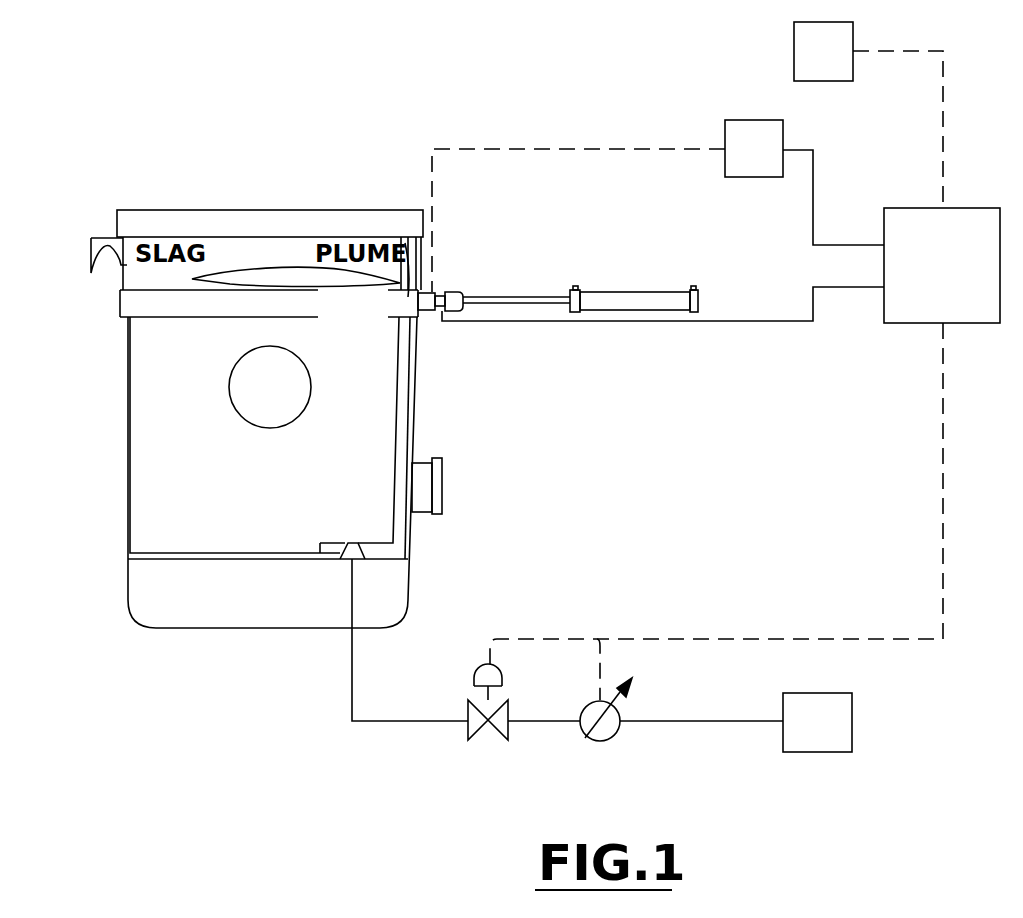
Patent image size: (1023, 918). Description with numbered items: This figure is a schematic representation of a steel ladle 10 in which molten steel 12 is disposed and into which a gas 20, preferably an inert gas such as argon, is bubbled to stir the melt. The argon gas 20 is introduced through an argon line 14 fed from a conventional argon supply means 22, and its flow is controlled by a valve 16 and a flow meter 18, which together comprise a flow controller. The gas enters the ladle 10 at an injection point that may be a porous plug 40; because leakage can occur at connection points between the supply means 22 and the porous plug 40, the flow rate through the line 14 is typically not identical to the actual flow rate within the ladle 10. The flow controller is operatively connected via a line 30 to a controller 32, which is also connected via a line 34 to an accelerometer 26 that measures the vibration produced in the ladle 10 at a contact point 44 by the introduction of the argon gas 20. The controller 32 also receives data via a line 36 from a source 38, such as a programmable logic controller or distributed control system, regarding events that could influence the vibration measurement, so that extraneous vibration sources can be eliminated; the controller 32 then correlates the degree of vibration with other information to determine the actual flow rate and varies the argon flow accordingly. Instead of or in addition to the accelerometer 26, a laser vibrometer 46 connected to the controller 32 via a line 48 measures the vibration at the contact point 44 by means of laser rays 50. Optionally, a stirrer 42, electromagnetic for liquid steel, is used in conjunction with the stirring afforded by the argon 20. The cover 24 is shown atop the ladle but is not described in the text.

The steel ladle 10 is at (408, 575).
The molten steel 12 is at (170, 483).
The argon line 14 is at (352, 697).
The valve 16 is at (490, 744).
The flow meter 18 is at (612, 741).
The gas 20 is at (375, 408).
The argon supply means 22 is at (798, 752).
The ladle cover 24 is at (117, 228).
The accelerometer 26 is at (440, 292).
The line 30 is at (887, 639).
The controller 32 is at (942, 265).
The line 34 is at (783, 321).
The line 36 is at (943, 60).
The source 38 is at (823, 51).
The porous plug 40 is at (346, 546).
The stirrer 42 is at (270, 387).
The contact point 44 is at (405, 243).
The laser vibrometer 46 is at (754, 148).
The line 48 is at (813, 232).
The laser rays 50 is at (629, 148).